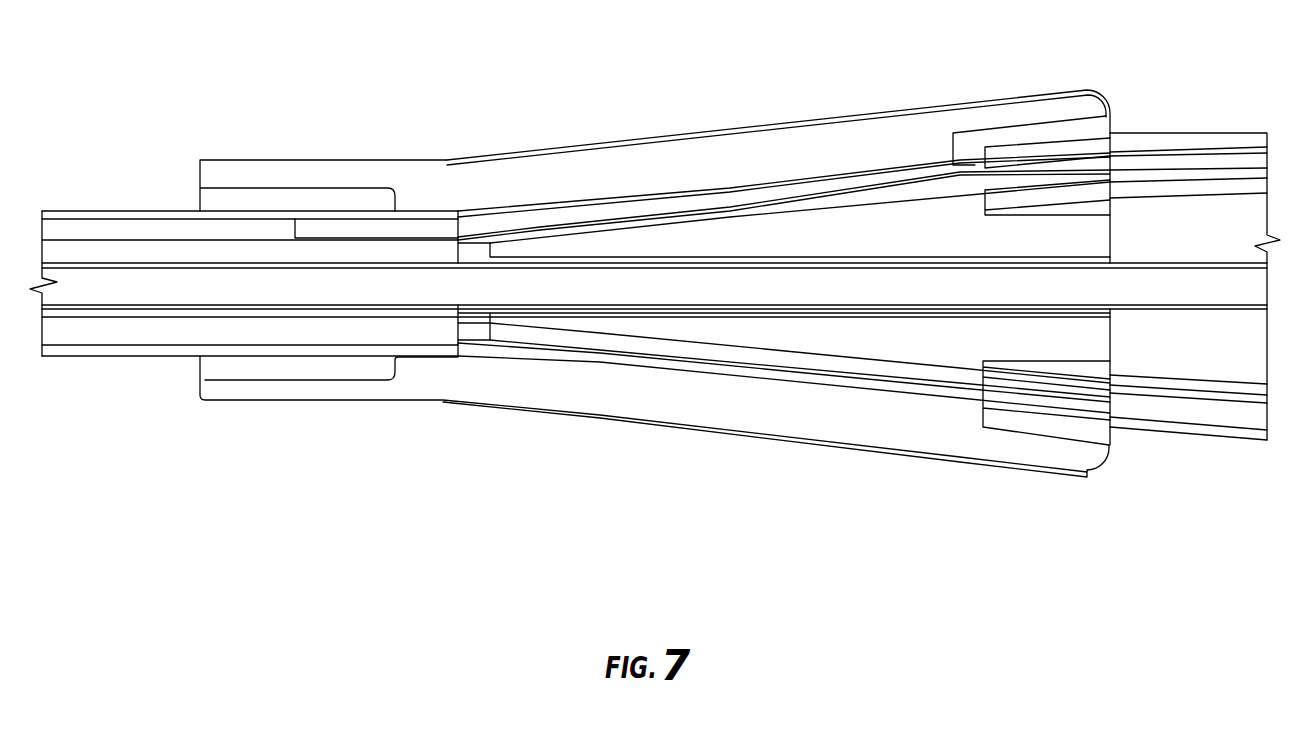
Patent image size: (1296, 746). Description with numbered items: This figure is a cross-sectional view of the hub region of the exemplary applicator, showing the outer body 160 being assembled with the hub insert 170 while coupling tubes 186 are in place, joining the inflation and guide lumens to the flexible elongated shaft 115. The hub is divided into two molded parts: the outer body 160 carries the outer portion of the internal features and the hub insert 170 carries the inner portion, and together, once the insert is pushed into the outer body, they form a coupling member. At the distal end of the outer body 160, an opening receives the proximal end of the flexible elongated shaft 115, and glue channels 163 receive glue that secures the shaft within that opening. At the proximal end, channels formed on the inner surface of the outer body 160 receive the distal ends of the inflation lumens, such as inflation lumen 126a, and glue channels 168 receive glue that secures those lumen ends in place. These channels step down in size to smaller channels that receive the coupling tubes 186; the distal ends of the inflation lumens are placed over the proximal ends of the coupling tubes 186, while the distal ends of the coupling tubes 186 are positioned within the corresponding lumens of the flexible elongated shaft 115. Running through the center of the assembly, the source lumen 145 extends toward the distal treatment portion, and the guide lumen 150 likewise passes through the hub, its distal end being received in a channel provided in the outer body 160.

The flexible elongated shaft 115 is at (119, 348).
The glue channels 163 is at (213, 198).
The coupling tubes 186 is at (428, 228).
The source lumen 145 is at (683, 278).
The outer body 160 is at (640, 397).
The hub insert 170 is at (860, 338).
The glue channels 168 is at (1126, 117).
The guide lumen 150 is at (1162, 407).
The inflation lumen 126a is at (1180, 138).